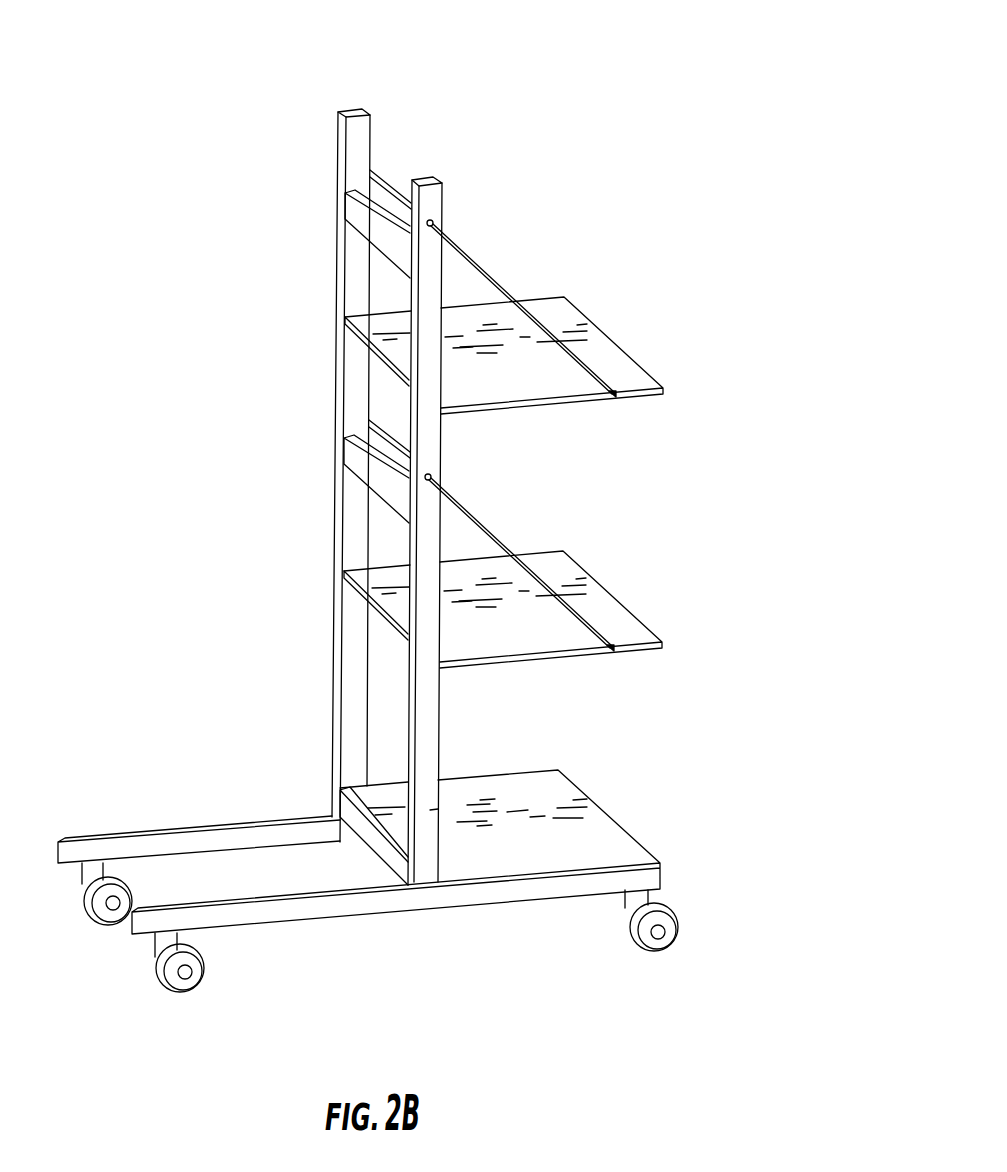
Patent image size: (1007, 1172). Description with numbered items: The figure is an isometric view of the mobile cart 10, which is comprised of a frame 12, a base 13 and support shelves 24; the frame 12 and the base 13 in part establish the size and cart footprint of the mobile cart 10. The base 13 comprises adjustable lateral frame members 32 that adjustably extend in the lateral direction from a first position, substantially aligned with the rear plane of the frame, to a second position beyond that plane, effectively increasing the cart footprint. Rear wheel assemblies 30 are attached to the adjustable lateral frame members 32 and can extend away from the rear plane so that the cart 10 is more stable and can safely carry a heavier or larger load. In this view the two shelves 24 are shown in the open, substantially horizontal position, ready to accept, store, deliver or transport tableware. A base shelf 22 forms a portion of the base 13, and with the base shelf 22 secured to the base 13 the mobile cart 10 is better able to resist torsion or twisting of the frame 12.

The mobile cart 10 is at (524, 76).
The frame 12 is at (251, 295).
The base 13 is at (575, 965).
The base shelf 22 is at (617, 838).
The support shelf 24 is at (617, 372).
The rear wheel assemblies 30 is at (162, 982).
The adjustable lateral frame members 32 is at (282, 822).